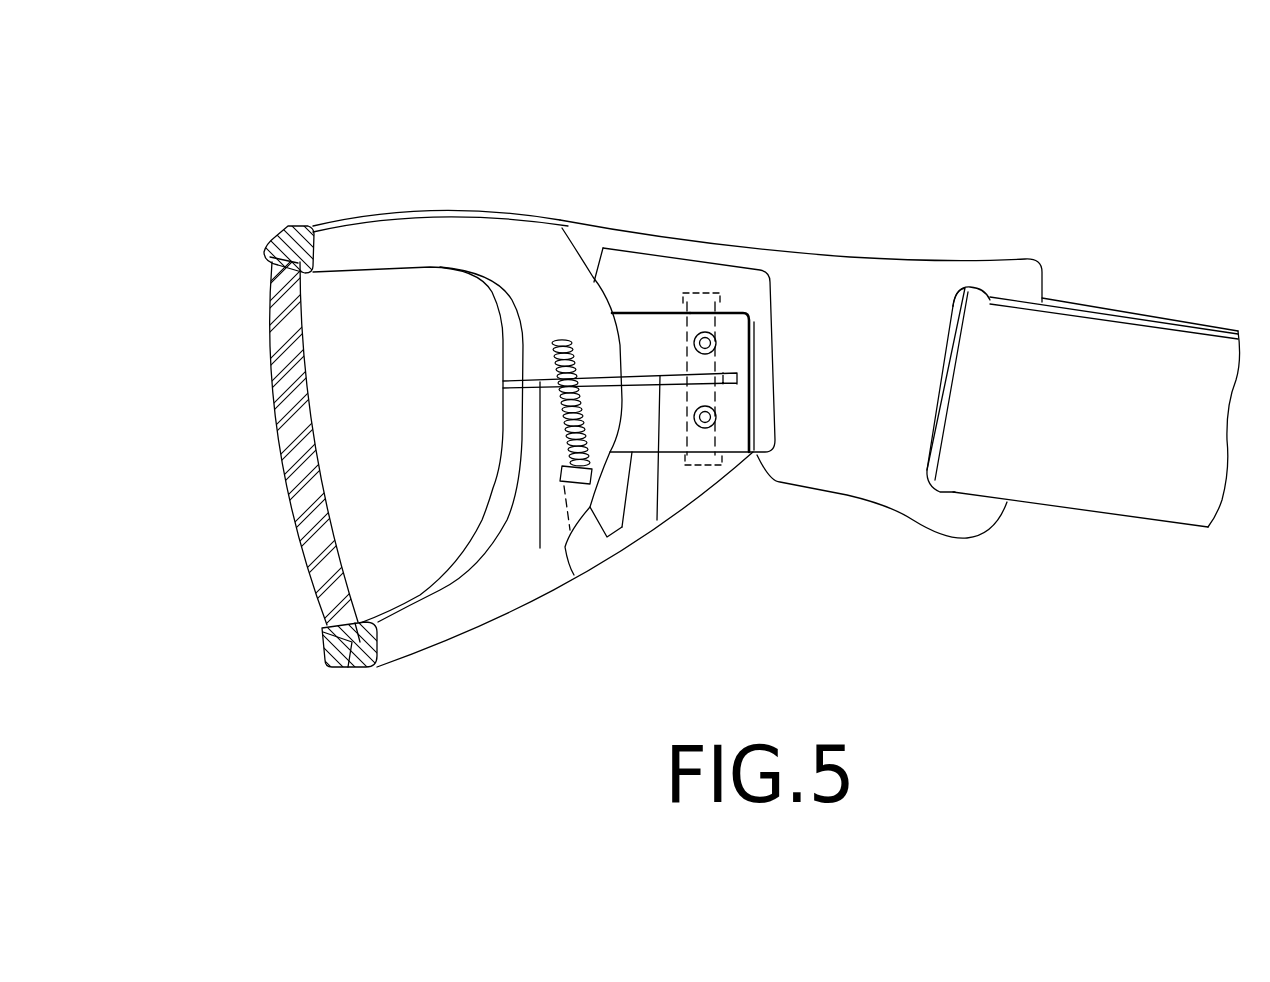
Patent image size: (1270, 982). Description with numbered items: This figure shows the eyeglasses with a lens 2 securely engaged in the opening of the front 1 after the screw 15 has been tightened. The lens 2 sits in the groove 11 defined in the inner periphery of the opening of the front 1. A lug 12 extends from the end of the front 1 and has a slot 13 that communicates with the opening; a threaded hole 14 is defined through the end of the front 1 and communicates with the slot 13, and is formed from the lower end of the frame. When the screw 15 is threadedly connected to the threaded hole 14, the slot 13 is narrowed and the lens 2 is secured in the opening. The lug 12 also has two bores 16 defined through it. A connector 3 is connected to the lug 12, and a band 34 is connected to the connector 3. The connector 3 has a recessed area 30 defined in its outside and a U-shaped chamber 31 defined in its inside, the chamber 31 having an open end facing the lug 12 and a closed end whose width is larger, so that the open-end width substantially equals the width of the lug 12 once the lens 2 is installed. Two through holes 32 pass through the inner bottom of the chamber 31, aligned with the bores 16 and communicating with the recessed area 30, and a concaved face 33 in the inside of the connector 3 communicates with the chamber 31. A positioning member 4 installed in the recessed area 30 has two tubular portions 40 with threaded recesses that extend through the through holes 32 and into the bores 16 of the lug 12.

The front 1 is at (437, 192).
The lens 2 is at (270, 511).
The connector 3 is at (866, 240).
The positioning member 4 is at (731, 330).
The groove 11 is at (347, 668).
The lug 12 is at (622, 527).
The slot 13 is at (540, 548).
The threaded hole 14 is at (553, 338).
The screw 15 is at (580, 485).
The bore 16 is at (713, 465).
The through hole 32 is at (721, 445).
The recessed area 30 is at (709, 292).
The chamber 31 is at (647, 312).
The concaved face 33 is at (755, 285).
The band 34 is at (1100, 492).
The tubular portion 40 is at (714, 423).